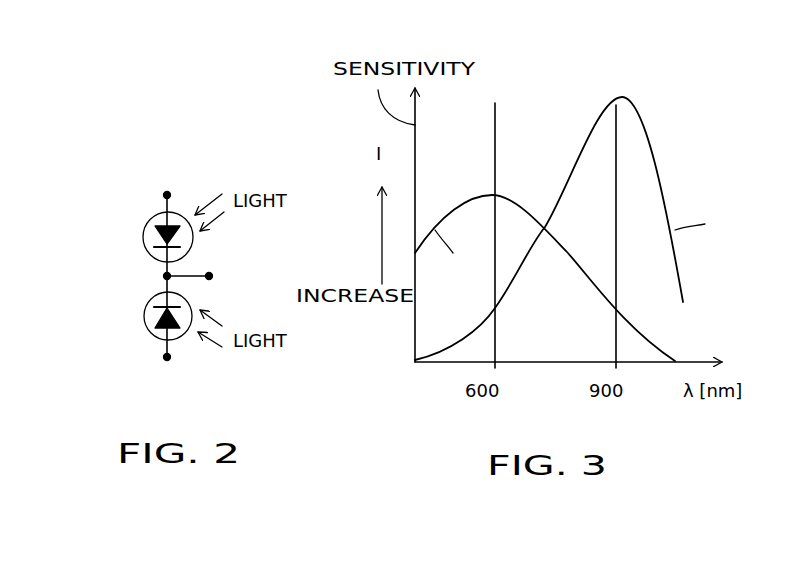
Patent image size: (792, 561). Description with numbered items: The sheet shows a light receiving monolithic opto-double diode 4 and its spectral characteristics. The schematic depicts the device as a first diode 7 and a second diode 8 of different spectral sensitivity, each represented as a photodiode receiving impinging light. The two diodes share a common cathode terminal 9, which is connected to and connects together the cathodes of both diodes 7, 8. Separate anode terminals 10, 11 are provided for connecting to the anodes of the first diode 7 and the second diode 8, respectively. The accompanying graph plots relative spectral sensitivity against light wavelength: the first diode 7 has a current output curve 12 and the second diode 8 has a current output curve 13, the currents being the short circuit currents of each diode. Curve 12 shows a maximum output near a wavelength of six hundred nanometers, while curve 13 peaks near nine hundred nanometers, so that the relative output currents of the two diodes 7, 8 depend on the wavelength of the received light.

In FIG. 2, the light-sensitive element (dual photodiode) 4 is at (148, 283).
In FIG. 2, the first diode 7 is at (145, 237).
In FIG. 2, the second diode 8 is at (155, 335).
In FIG. 2, the common cathode terminal 9 is at (212, 277).
In FIG. 2, the anode terminal 10 is at (170, 194).
In FIG. 2, the anode terminal 11 is at (170, 359).
In FIG. 3, the current output curve 12 is at (452, 205).
In FIG. 3, the current output curve 13 is at (658, 160).